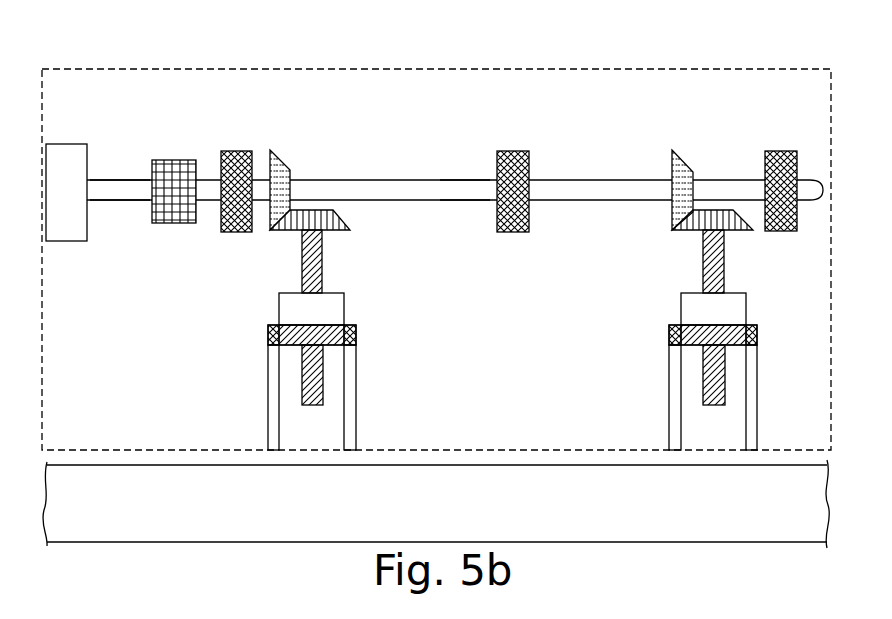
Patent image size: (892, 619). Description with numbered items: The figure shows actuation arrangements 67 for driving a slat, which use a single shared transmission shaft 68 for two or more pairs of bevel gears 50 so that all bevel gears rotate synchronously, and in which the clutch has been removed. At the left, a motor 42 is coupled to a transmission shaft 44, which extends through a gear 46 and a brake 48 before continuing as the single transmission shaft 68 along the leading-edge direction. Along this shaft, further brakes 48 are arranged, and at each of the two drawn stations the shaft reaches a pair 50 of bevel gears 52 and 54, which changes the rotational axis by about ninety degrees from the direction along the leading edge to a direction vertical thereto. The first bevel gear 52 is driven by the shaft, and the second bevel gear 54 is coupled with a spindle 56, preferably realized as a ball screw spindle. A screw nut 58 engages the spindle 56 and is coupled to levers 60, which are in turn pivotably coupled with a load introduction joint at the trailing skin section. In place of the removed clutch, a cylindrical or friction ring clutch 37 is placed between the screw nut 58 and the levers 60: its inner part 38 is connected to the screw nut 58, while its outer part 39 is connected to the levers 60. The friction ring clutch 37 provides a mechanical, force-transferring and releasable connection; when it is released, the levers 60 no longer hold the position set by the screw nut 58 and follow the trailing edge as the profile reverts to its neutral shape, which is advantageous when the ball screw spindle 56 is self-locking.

The friction ring clutch 37 is at (363, 335).
The inner part 38 is at (291, 345).
The outer part 39 is at (268, 331).
The motor 42 is at (68, 241).
The transmission shaft 44 is at (118, 186).
The gear 46 is at (173, 160).
The brake 48 is at (236, 152).
The pair of bevel gears 50 is at (333, 162).
The first bevel gear 52 is at (281, 160).
The second bevel gear 54 is at (341, 232).
The spindle 56 is at (305, 258).
The screw nut 58 is at (335, 312).
The levers 60 is at (268, 440).
The actuation arrangement 67 is at (207, 302).
The single transmission shaft 68 is at (466, 190).